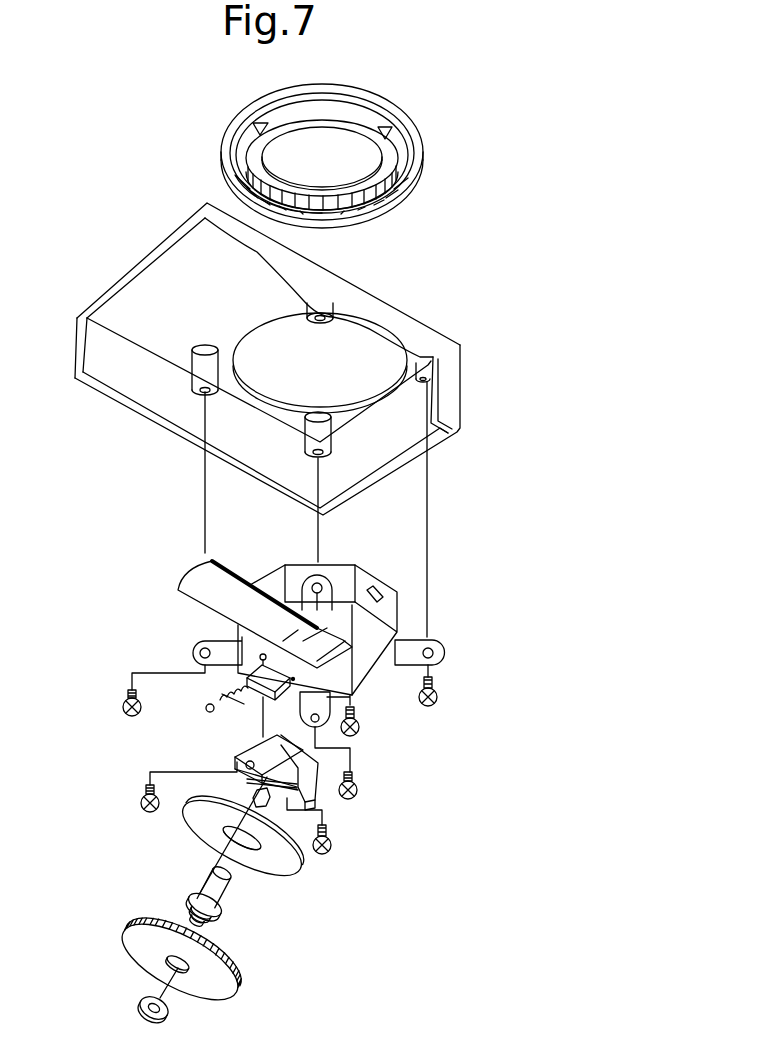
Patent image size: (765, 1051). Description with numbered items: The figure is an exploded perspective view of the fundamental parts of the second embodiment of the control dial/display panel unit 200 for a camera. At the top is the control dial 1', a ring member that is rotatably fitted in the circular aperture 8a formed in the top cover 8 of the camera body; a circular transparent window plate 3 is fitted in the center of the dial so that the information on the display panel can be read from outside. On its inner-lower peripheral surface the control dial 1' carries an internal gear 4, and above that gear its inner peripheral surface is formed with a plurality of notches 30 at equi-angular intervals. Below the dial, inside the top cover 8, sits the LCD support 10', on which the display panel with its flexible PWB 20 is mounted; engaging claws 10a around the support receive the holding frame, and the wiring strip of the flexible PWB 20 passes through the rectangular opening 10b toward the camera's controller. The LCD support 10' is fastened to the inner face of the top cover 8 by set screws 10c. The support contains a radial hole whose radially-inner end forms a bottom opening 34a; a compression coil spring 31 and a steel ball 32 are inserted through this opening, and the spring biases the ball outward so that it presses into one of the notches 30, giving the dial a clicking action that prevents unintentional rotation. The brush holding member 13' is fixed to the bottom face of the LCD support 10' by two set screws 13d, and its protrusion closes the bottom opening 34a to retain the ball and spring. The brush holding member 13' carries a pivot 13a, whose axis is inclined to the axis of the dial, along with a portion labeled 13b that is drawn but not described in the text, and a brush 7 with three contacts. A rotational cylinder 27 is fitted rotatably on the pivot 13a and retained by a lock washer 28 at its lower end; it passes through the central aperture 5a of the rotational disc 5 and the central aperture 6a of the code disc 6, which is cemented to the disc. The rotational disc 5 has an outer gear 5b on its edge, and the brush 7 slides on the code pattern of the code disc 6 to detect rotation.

The control dial/display panel unit 200 is at (204, 132).
The control dial 1' is at (317, 139).
The transparent window plate 3 is at (353, 163).
The internal gear 4 is at (351, 217).
The notches 30 is at (233, 182).
The top cover 8 is at (403, 318).
The circular aperture 8a is at (320, 363).
The flexible PWB 20 is at (235, 590).
The LCD support 10' is at (318, 656).
The engaging claws 10a is at (382, 592).
The rectangular opening 10b is at (352, 645).
The set screws 10c is at (130, 715).
The bottom opening 34a is at (290, 667).
The compression coil spring 31 is at (228, 705).
The steel ball 32 is at (204, 711).
The brush holding member 13' is at (251, 768).
The pivot 13a is at (284, 797).
The bracket flange 13b is at (323, 788).
The set screws 13d is at (142, 793).
The brush 7 is at (247, 783).
The code disc 6 is at (271, 868).
The central aperture 6a is at (228, 836).
The rotational cylinder 27 is at (220, 903).
The rotational disc 5 is at (132, 943).
The central aperture 5a is at (172, 965).
The outer gear 5b is at (231, 962).
The lock washer 28 is at (142, 1007).